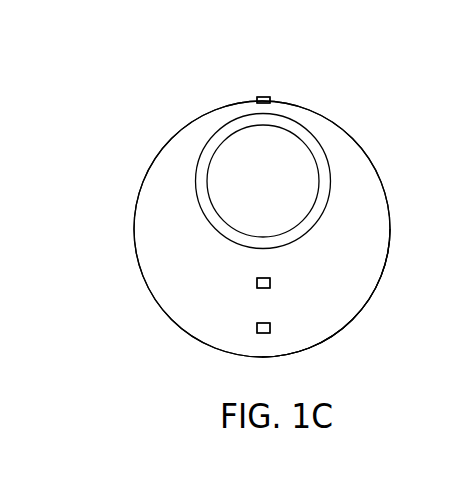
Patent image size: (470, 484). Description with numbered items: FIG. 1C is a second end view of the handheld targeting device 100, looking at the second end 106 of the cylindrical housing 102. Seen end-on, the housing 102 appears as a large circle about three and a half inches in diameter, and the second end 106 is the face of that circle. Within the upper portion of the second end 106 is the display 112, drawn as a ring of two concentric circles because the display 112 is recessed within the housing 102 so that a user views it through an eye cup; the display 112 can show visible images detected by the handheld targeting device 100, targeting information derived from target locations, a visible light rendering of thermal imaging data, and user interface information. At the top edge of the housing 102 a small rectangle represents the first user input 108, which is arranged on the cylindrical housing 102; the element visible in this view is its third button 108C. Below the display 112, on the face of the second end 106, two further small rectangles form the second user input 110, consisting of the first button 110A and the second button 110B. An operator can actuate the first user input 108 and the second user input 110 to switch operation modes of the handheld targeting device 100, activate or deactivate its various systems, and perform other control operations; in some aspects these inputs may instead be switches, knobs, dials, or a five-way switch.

The handheld targeting device 100 is at (208, 96).
The housing 102 is at (375, 165).
The second end 106 is at (373, 218).
The first user input 108 is at (265, 74).
The third button 108C is at (270, 100).
The second user input 110 is at (292, 303).
The first button 110A is at (270, 283).
The second button 110B is at (270, 328).
The display 112 is at (311, 140).